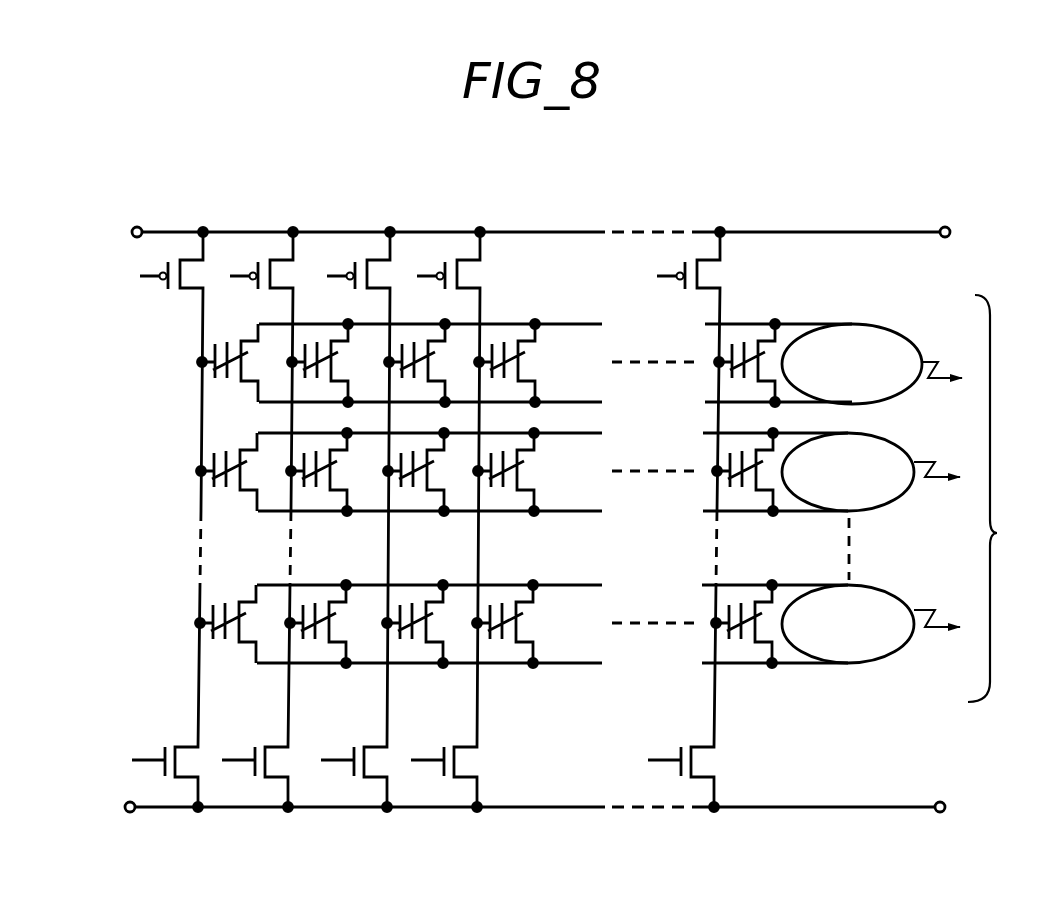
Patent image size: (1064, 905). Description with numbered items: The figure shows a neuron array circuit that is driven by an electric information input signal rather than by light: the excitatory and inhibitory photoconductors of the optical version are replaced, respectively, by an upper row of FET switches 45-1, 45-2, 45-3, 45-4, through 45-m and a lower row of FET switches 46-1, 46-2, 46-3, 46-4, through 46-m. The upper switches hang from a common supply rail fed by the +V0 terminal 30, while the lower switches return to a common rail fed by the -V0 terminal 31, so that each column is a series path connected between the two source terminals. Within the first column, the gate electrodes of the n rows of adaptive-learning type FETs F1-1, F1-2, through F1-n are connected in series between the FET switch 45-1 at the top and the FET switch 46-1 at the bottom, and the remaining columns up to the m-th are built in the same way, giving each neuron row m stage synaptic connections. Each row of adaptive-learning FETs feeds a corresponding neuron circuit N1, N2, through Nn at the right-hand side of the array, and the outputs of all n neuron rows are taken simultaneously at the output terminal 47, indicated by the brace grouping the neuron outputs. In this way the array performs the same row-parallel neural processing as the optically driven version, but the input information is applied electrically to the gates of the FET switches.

The +V0 terminal 30 is at (137, 226).
The -V0 terminal 31 is at (128, 815).
The FET switch 45-1 is at (177, 258).
The FET switch 45-2 is at (268, 258).
The FET switch 45-3 is at (362, 260).
The FET switch 45-4 is at (448, 260).
The FET switch 45-m is at (691, 260).
The FET switch 46-1 is at (170, 778).
The FET switch 46-2 is at (258, 778).
The FET switch 46-3 is at (351, 778).
The FET switch 46-4 is at (441, 778).
The FET switch 46-m is at (688, 778).
The output terminal 47 is at (1007, 498).
The adaptive-learning type FET F1-1 is at (214, 372).
The adaptive-learning type FET F1-2 is at (217, 480).
The adaptive-learning type FET F1-n is at (211, 636).
The neuron circuit N1 is at (872, 364).
The neuron circuit N2 is at (871, 472).
The neuron circuit Nn is at (871, 624).